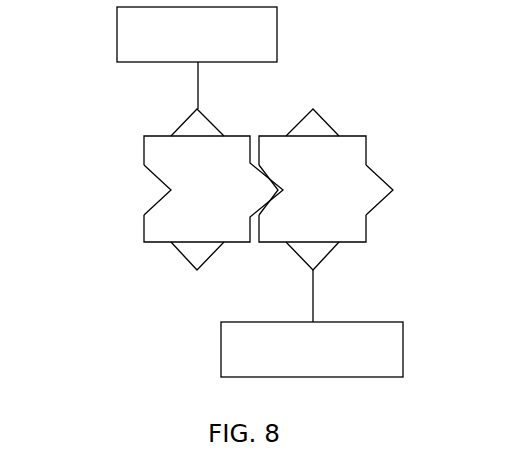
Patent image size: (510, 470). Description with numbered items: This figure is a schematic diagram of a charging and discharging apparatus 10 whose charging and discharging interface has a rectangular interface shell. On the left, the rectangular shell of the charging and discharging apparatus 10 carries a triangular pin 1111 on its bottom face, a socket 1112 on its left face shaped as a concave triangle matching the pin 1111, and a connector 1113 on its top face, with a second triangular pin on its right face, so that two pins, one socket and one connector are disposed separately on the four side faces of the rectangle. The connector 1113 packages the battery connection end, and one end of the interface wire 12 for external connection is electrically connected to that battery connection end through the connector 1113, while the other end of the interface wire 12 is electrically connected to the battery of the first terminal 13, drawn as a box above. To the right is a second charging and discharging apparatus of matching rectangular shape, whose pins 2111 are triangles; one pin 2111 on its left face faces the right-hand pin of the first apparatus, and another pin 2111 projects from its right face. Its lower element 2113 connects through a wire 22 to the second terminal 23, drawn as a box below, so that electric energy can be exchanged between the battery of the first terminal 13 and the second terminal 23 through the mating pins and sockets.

The charging and discharging apparatus 10 is at (88, 135).
The interface wire for external connection 12 is at (198, 87).
The first terminal 13 is at (225, 62).
The pin 1111 is at (208, 252).
The socket 1112 is at (157, 203).
The connector 1113 is at (210, 120).
The pin of second charging and discharging apparatus 2111 is at (325, 115).
The bottom protrusion of second unit 2113 is at (323, 252).
The second wire 22 is at (314, 305).
The second terminal 23 is at (373, 322).